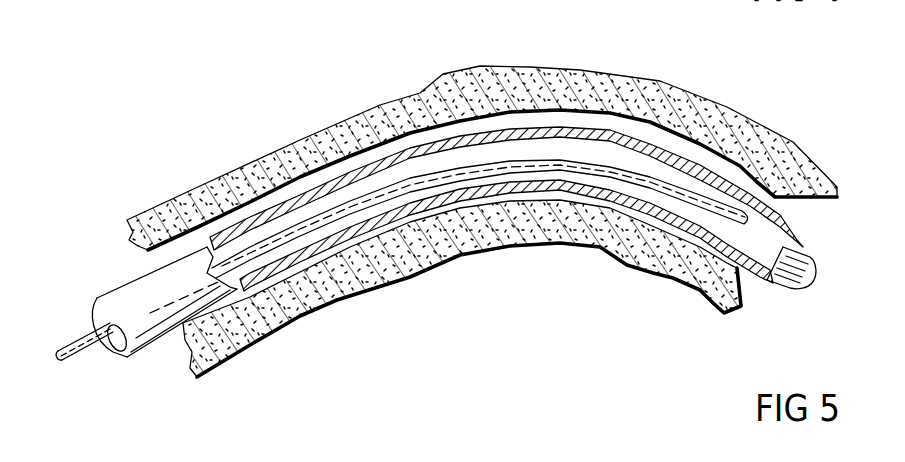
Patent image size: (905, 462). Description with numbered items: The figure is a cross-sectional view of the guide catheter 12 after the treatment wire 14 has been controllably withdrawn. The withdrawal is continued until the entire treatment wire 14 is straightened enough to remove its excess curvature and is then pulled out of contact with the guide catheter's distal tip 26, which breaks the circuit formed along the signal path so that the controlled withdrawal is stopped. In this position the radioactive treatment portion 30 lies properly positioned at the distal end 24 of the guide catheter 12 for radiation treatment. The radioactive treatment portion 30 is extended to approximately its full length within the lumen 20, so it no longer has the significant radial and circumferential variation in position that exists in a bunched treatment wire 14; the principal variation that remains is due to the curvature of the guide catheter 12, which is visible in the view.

The guide catheter 12 is at (272, 288).
The treatment wire 14 is at (250, 243).
The lumen 20 is at (313, 205).
The distal end 24 is at (760, 190).
The distal tip 26 is at (807, 289).
The radioactive treatment portion 30 is at (561, 161).